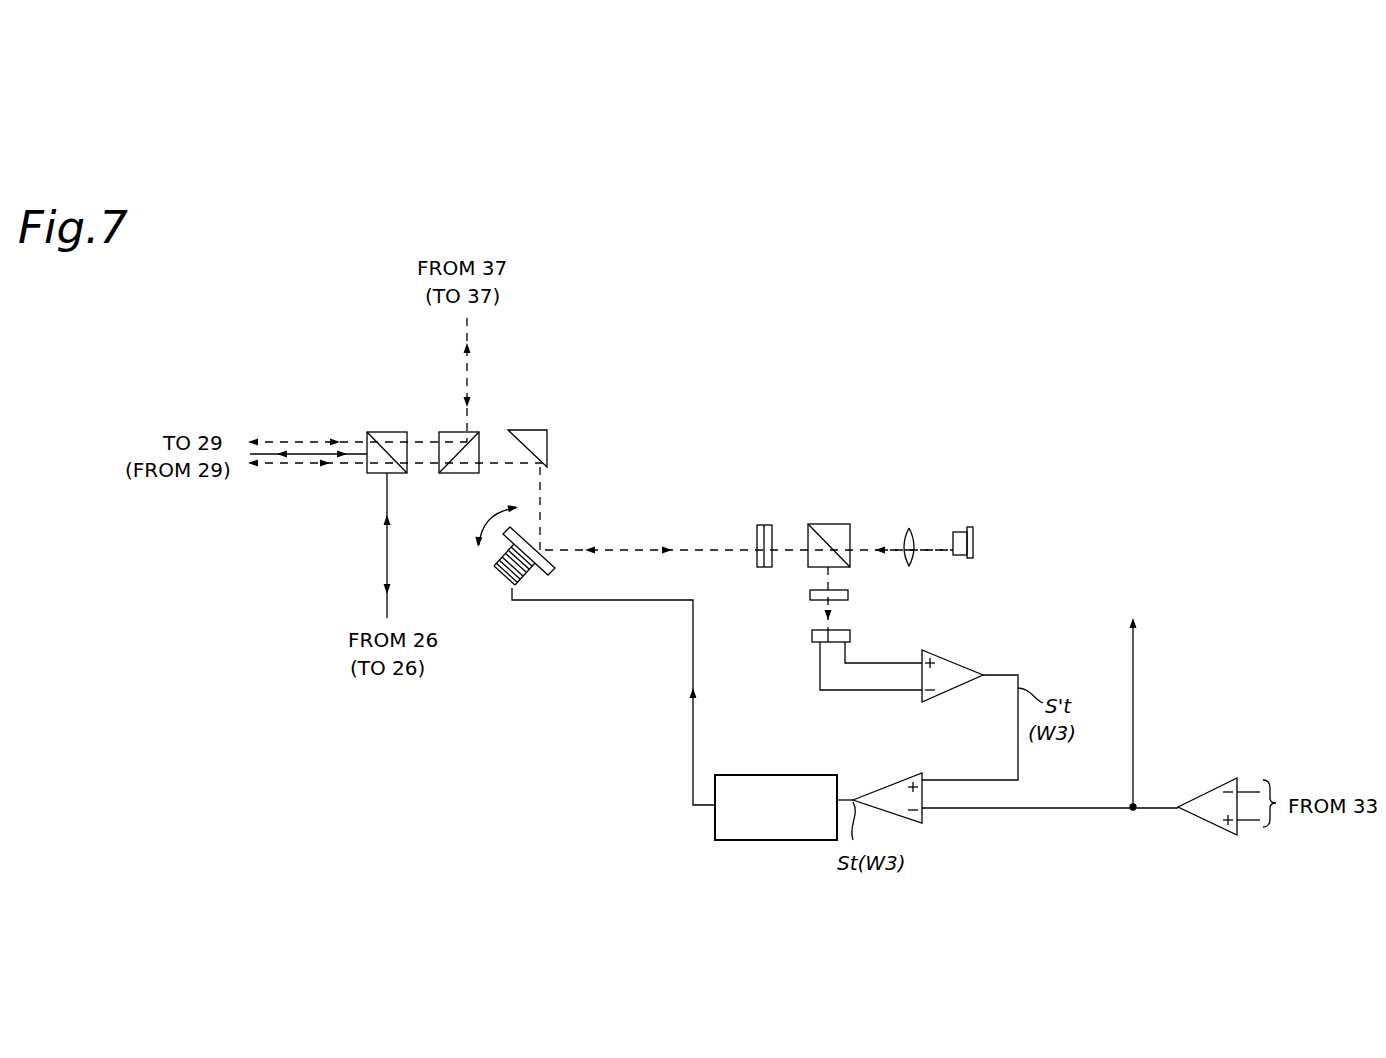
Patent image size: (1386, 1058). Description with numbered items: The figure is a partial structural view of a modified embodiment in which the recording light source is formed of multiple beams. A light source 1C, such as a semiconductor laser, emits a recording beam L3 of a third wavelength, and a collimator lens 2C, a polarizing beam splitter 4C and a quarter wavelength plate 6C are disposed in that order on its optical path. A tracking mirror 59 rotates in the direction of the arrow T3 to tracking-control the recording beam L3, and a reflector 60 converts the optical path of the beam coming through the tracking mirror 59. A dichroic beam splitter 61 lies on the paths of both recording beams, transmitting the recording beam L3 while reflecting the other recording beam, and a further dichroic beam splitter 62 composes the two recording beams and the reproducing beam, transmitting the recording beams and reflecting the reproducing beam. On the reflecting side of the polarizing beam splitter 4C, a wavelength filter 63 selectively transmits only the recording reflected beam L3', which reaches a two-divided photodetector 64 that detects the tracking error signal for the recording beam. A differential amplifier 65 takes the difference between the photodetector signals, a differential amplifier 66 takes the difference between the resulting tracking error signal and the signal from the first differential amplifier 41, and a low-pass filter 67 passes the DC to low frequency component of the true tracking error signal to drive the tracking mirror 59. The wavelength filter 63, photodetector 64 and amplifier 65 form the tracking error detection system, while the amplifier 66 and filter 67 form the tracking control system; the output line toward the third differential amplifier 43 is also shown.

The dichroic beam splitter 62 is at (379, 432).
The dichroic beam splitter 61 is at (450, 432).
The reflector 60 is at (525, 430).
The tracking mirror 59 is at (540, 550).
The direction of rotation of tracking mirror T3 is at (487, 522).
The quarter wavelength plate 6C is at (762, 525).
The polarizing beam splitter 4C is at (826, 524).
The collimator lens 2C is at (906, 528).
The recording beam L3 is at (917, 496).
The light source 1C is at (957, 527).
The recording reflected beam L3' is at (790, 598).
The wavelength filter 63 is at (848, 594).
The two-divided photodetector 64 is at (812, 640).
The differential amplifier 65 is at (952, 662).
The differential amplifier 66 is at (887, 780).
The low-pass filter 67 is at (758, 775).
The third differential amplifier 43 is at (1127, 693).
The first differential amplifier 41 is at (1197, 817).